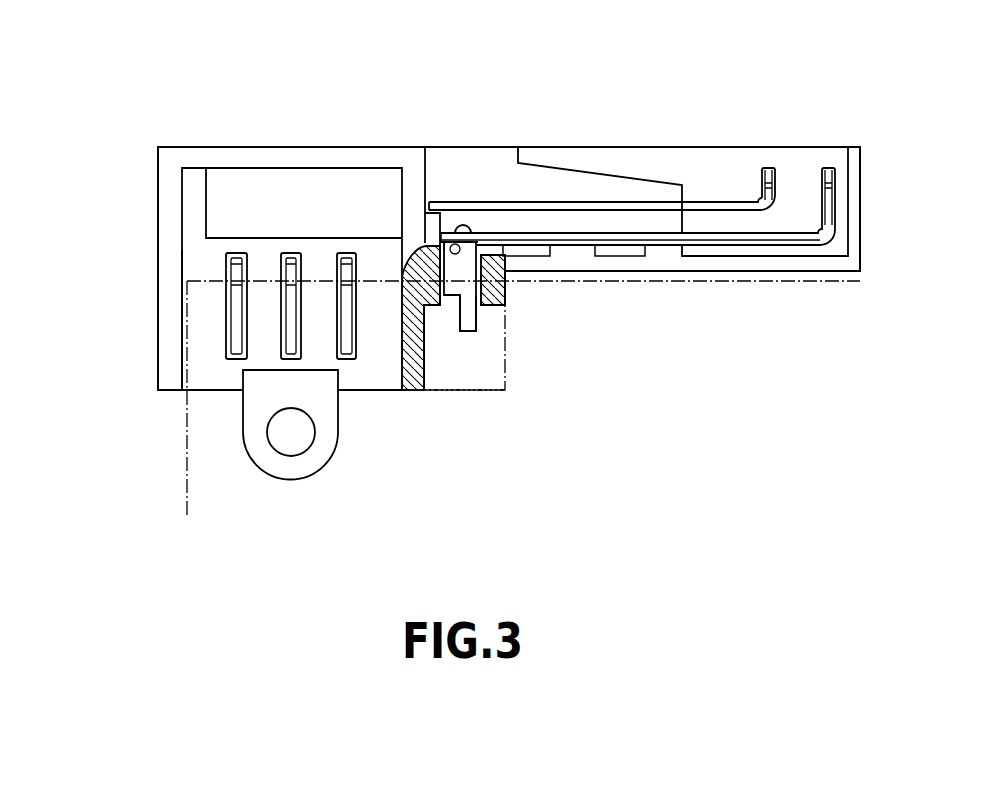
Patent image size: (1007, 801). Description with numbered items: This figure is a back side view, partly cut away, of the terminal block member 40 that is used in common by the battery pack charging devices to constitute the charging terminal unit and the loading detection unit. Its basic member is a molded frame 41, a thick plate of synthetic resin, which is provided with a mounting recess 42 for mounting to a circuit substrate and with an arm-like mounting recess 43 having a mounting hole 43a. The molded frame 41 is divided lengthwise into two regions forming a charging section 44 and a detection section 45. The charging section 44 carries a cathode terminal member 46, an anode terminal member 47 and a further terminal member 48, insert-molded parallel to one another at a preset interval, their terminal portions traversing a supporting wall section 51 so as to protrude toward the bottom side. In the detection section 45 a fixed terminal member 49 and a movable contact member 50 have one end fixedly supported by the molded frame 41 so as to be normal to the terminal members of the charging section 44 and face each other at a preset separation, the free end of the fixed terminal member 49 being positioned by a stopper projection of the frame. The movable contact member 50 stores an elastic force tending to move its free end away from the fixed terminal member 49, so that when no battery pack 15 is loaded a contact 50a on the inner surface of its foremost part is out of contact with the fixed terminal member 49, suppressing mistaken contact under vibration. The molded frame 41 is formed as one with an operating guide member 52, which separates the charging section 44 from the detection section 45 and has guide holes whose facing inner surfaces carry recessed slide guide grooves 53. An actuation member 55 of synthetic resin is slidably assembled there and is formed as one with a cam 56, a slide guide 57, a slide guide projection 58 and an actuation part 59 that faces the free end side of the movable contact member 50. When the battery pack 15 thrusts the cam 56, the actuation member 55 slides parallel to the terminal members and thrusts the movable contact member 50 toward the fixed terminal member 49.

The terminal block member 40 is at (78, 82).
The molded frame 41 is at (657, 163).
The mounting recess 42 is at (255, 193).
The arm-like mounting recess 43 is at (285, 468).
The mounting hole 43a is at (300, 432).
The charging section 44 is at (196, 256).
The detection section 45 is at (493, 190).
The cathode terminal member 46 is at (349, 306).
The anode terminal member 47 is at (237, 253).
The terminal member 48 is at (288, 253).
The fixed terminal member 49 is at (728, 203).
The movable contact member 50 is at (752, 240).
The contact 50a is at (457, 244).
The supporting wall section 51 is at (504, 377).
The operating guide member 52 is at (500, 293).
The slide guide groove 53 is at (452, 306).
The actuation member 55 is at (493, 422).
The cam 56 is at (476, 322).
The slide guide 57 is at (470, 252).
The slide guide projection 58 is at (423, 244).
The actuation part 59 is at (460, 225).
The battery pack 15 is at (187, 457).